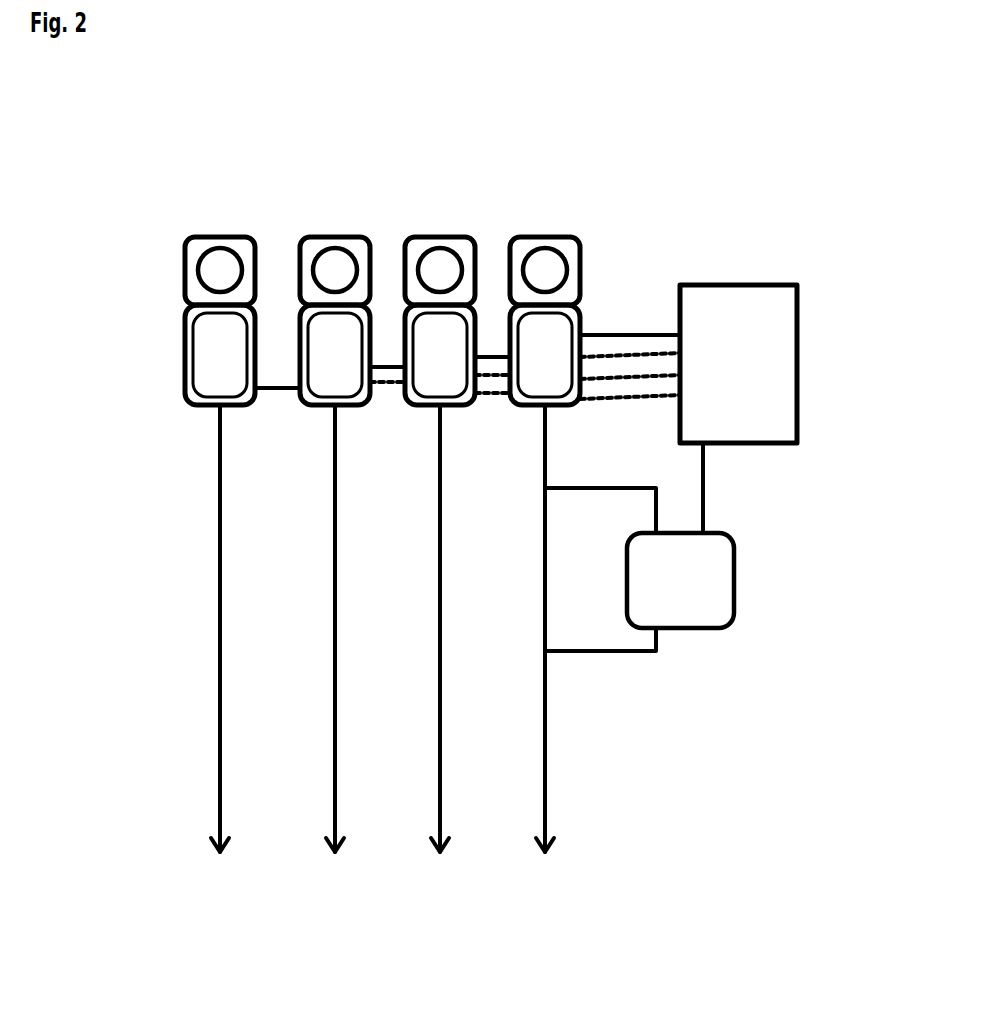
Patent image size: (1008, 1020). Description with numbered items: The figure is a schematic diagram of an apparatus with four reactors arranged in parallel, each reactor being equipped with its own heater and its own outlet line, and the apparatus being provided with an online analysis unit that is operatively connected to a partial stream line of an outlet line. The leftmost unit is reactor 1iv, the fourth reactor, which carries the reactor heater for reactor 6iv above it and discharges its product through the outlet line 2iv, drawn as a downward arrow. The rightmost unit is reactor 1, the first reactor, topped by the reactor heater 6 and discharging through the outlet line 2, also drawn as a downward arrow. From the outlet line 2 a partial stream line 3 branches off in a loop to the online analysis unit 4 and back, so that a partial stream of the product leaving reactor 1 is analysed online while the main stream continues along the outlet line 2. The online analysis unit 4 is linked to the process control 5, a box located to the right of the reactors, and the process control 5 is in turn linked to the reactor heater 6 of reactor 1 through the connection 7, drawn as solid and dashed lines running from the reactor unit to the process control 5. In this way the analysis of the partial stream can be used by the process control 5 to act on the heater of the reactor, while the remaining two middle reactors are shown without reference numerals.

The reactor heater for reactor 4 6iv is at (193, 243).
The reactor 4 1iv is at (212, 348).
The outlet line connected to reactor 4 2iv is at (220, 653).
The reactor heater for reactor 1 6 is at (578, 247).
The reactor 1 is at (556, 338).
The outlet line connected to reactor 1 2 is at (543, 735).
The connection of process control to reactor heater 1 7 is at (637, 333).
The process control 5 is at (762, 287).
The online analysis unit 4 is at (730, 557).
The partial stream line 3 is at (605, 653).